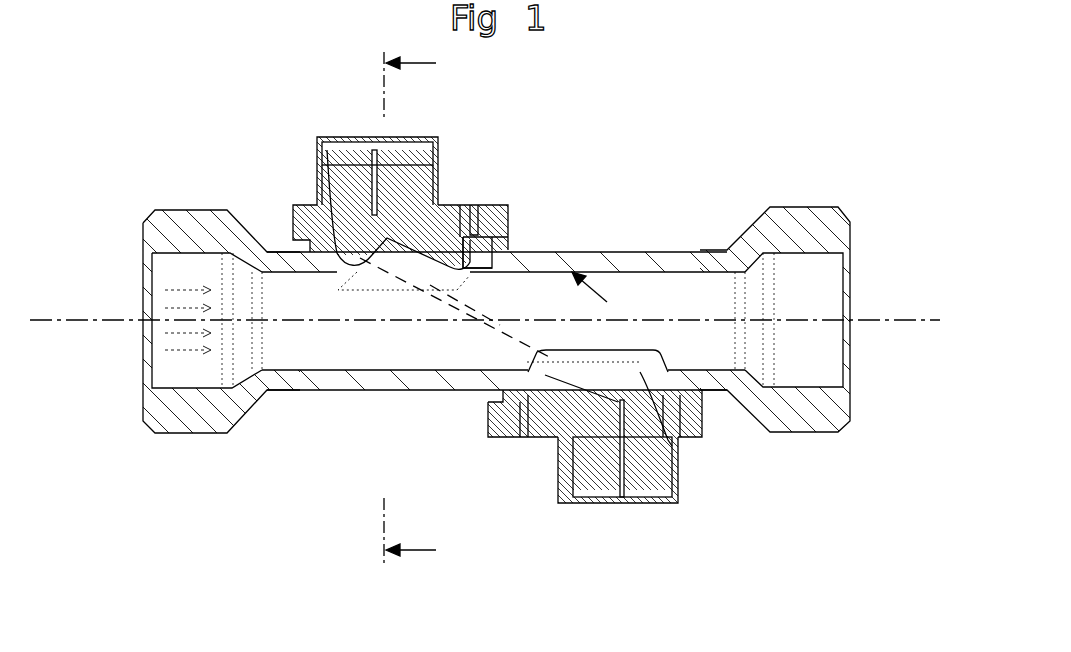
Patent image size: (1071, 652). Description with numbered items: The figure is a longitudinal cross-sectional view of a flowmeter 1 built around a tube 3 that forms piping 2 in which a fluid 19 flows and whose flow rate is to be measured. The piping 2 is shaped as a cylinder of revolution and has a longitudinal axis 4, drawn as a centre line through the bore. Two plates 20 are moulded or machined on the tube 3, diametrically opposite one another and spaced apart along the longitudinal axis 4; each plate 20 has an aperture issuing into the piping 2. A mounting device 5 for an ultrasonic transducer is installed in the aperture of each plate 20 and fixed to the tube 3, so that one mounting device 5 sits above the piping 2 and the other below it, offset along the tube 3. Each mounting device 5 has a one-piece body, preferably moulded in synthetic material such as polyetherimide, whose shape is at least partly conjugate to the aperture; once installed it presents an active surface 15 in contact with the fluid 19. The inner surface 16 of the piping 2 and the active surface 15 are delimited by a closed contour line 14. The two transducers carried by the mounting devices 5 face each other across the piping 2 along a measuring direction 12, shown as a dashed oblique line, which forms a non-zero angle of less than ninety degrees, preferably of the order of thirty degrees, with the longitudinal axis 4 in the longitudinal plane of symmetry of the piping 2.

The flowmeter 1 is at (630, 88).
The piping 2 is at (688, 298).
The tube 3 is at (645, 265).
The longitudinal axis 4 is at (92, 322).
The mounting device 5 is at (467, 165).
The measuring direction 12 is at (527, 335).
The contour line 14 is at (360, 290).
The active surface 15 is at (510, 287).
The inner surface 16 is at (606, 302).
The fluid 19 is at (187, 343).
The plate 20 is at (302, 248).